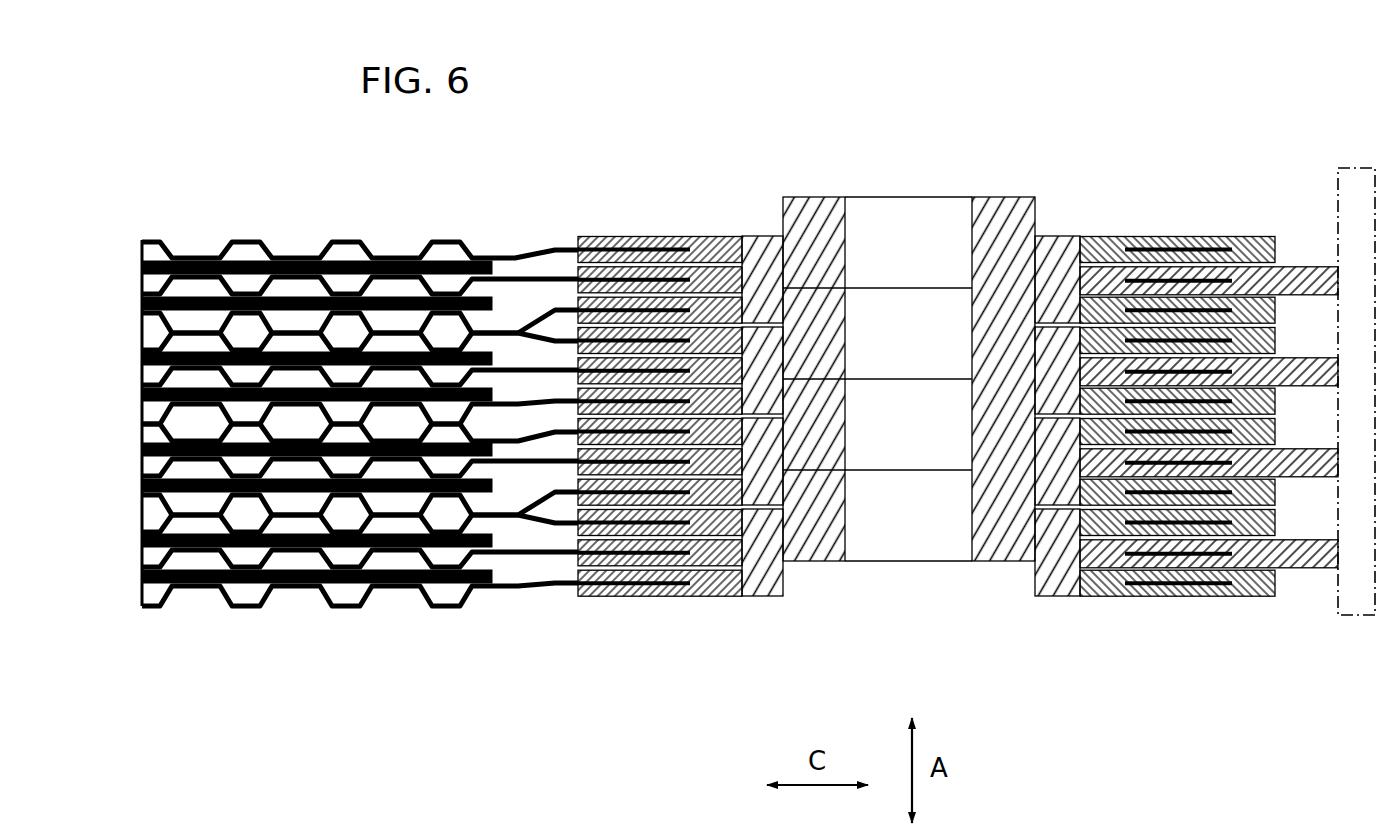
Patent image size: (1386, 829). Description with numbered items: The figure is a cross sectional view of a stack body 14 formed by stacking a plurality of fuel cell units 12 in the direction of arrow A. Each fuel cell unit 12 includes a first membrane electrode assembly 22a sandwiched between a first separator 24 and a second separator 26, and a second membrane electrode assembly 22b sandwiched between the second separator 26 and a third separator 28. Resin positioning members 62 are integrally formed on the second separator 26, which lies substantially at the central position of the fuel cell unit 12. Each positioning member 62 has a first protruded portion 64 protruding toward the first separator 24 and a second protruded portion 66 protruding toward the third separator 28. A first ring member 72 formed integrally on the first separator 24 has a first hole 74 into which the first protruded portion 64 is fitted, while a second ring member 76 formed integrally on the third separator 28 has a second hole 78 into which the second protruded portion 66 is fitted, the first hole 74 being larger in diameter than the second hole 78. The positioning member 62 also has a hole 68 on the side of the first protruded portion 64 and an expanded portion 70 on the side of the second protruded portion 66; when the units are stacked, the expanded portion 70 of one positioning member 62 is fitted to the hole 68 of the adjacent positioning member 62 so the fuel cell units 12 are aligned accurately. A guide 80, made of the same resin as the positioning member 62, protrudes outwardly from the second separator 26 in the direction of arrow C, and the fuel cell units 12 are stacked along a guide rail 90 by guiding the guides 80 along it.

The fuel cell unit 12 is at (140, 572).
The stack body 14 is at (527, 196).
The first membrane electrode assembly 22a is at (140, 304).
The second membrane electrode assembly 22b is at (140, 270).
The first separator 24 is at (142, 326).
The second separator 26 is at (140, 285).
The third separator 28 is at (142, 251).
The positioning member 62 is at (1024, 189).
The first protruded portion 64 is at (1060, 598).
The second protruded portion 66 is at (1065, 515).
The hole 68 is at (800, 290).
The expanded portion 70 is at (798, 300).
The first ring member 72 is at (713, 300).
The first hole 74 is at (738, 588).
The second ring member 76 is at (1132, 232).
The second hole 78 is at (742, 523).
The guide 80 is at (1312, 295).
The guide rail 90 is at (1350, 612).